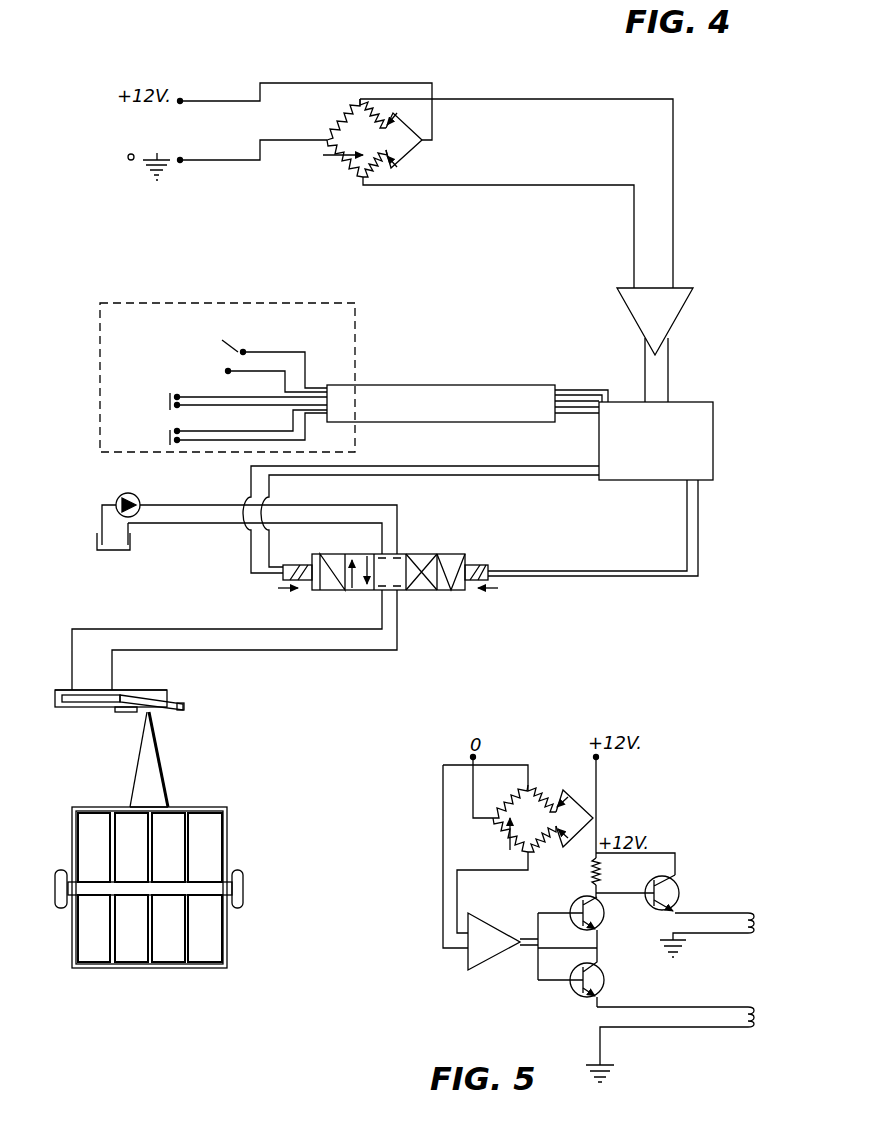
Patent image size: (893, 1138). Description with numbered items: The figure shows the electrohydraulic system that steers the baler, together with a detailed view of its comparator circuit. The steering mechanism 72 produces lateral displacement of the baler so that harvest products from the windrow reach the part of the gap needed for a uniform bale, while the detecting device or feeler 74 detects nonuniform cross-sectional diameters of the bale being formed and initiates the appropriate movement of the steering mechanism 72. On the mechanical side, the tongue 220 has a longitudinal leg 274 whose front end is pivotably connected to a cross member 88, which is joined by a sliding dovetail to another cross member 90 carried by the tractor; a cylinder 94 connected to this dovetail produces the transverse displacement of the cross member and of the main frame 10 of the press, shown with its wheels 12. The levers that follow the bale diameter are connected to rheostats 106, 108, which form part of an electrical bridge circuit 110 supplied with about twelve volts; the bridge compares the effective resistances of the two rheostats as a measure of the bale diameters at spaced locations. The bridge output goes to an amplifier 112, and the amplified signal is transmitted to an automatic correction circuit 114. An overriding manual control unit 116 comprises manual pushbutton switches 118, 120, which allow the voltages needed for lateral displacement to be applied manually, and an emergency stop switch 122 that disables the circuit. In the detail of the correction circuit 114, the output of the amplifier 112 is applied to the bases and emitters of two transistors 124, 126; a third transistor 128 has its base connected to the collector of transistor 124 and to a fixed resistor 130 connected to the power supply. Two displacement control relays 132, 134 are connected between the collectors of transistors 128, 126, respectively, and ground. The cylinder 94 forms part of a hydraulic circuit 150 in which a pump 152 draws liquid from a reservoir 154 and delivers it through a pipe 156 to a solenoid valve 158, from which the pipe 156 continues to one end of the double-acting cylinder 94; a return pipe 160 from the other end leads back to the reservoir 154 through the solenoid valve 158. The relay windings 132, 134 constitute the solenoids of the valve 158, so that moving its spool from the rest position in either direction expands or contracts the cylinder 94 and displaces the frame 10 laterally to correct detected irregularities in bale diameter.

In FIG. 4, the main frame 10 is at (237, 834).
In FIG. 4, the wheel 12 is at (62, 870).
In FIG. 4, the steering mechanism 72 is at (77, 714).
In FIG. 4, the detecting device 74 is at (677, 138).
In FIG. 4, the cross member 88 is at (137, 712).
In FIG. 4, the cross member 90 is at (155, 695).
In FIG. 4, the cylinder 94 is at (83, 690).
In FIG. 4, the rheostat 106 is at (398, 146).
In FIG. 4, the rheostat 108 is at (412, 128).
In FIG. 4, the electrical bridge circuit 110 is at (379, 139).
In FIG. 5, the electrical bridge circuit 110 is at (542, 773).
In FIG. 4, the amplifier 112 is at (625, 306).
In FIG. 5, the amplifier 112 is at (470, 965).
In FIG. 4, the automatic correction circuit 114 is at (650, 459).
In FIG. 5, the automatic correction circuit 114 is at (674, 828).
In FIG. 4, the manual control unit 116 is at (327, 377).
In FIG. 4, the manual pushbutton switch 118 is at (170, 397).
In FIG. 4, the manual pushbutton switch 120 is at (170, 436).
In FIG. 4, the emergency stop switch 122 is at (236, 355).
In FIG. 5, the transistor 124 is at (597, 924).
In FIG. 5, the transistor 126 is at (606, 980).
In FIG. 5, the third transistor 128 is at (680, 890).
In FIG. 5, the resistor 130 is at (590, 866).
In FIG. 5, the displacement control relay 132 is at (738, 936).
In FIG. 5, the displacement control relay 134 is at (742, 1030).
In FIG. 4, the hydraulic circuit 150 is at (197, 626).
In FIG. 4, the pump 152 is at (121, 494).
In FIG. 4, the reservoir 154 is at (105, 552).
In FIG. 4, the pipe 156 is at (392, 505).
In FIG. 4, the solenoid valve 158 is at (418, 592).
In FIG. 4, the return pipe 160 is at (337, 524).
In FIG. 4, the tongue 220 is at (165, 742).
In FIG. 4, the longitudinal leg 274 is at (155, 786).